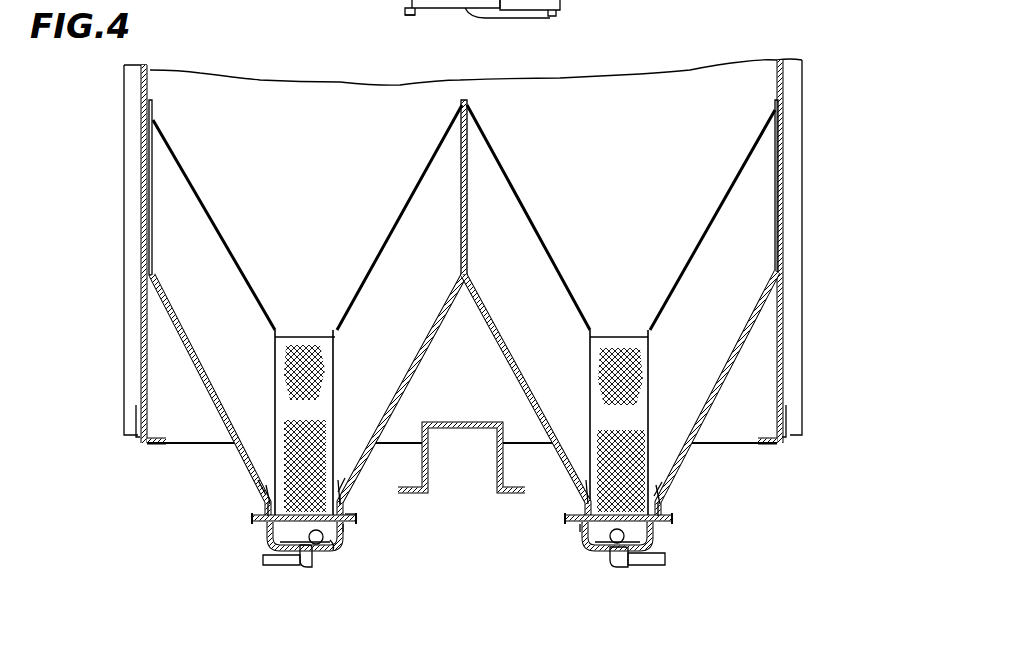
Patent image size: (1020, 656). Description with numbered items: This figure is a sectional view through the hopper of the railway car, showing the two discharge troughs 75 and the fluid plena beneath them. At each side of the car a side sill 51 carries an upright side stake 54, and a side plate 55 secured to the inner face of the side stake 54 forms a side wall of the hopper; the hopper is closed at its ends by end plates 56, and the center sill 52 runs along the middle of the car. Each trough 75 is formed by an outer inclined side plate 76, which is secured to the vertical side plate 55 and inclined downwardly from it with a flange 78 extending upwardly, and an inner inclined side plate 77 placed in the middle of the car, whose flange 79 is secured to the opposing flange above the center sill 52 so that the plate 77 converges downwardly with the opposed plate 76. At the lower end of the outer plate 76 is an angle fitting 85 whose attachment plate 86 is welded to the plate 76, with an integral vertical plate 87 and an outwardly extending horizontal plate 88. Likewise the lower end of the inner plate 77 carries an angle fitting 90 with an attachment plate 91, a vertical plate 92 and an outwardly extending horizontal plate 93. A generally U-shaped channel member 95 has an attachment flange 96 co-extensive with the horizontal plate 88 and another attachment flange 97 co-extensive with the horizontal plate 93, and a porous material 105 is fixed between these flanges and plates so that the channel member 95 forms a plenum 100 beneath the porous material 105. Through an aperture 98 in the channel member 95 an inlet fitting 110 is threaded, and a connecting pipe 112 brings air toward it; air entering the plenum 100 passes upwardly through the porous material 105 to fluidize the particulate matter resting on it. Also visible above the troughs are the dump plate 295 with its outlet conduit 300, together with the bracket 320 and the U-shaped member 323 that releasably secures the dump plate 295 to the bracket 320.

The side sill 51 is at (458, 461).
The center sill 52 is at (461, 476).
The side stake 54 is at (455, 247).
The side plate 55 is at (454, 251).
The end plate 56 is at (463, 55).
The discharge trough 75 is at (464, 310).
The inclined side plate 76 is at (464, 393).
The inclined side plate 77 is at (464, 393).
The flange 78 is at (463, 187).
The flange 79 is at (465, 187).
The angle fitting 85 is at (442, 479).
The attachment plate 86 is at (467, 473).
The vertical plate 87 is at (467, 499).
The horizontal plate 88 is at (467, 518).
The angle fitting 90 is at (463, 453).
The attachment plate 91 is at (376, 475).
The vertical plate 92 is at (366, 493).
The horizontal plate 93 is at (387, 525).
The channel member 95 is at (533, 564).
The attachment flange 96 is at (475, 540).
The attachment flange 97 is at (461, 541).
The aperture 98 is at (466, 556).
The plenum 100 is at (418, 559).
The porous material 105 is at (464, 428).
The inlet fitting 110 is at (466, 569).
The connecting pipe 112 is at (471, 576).
The dump plate 295 is at (477, 24).
The outlet conduit 300 is at (545, 24).
The bracket 320 is at (364, 7).
The U-shaped member 323 is at (380, 23).